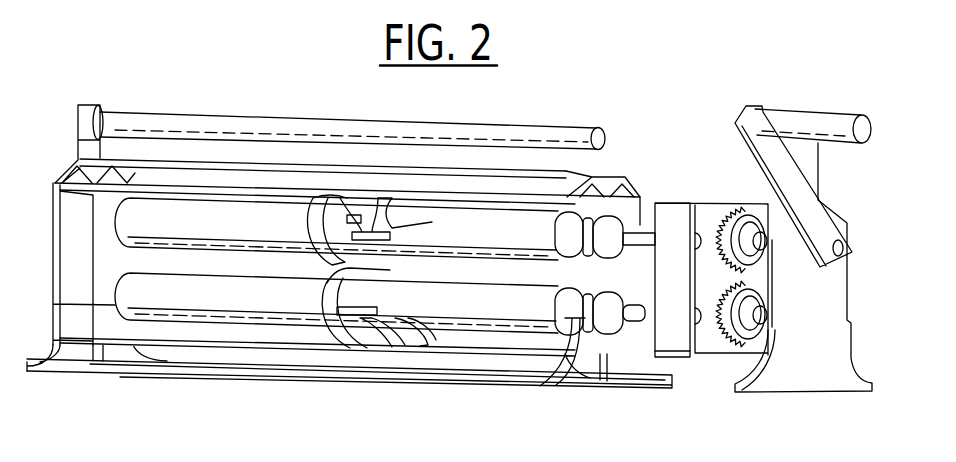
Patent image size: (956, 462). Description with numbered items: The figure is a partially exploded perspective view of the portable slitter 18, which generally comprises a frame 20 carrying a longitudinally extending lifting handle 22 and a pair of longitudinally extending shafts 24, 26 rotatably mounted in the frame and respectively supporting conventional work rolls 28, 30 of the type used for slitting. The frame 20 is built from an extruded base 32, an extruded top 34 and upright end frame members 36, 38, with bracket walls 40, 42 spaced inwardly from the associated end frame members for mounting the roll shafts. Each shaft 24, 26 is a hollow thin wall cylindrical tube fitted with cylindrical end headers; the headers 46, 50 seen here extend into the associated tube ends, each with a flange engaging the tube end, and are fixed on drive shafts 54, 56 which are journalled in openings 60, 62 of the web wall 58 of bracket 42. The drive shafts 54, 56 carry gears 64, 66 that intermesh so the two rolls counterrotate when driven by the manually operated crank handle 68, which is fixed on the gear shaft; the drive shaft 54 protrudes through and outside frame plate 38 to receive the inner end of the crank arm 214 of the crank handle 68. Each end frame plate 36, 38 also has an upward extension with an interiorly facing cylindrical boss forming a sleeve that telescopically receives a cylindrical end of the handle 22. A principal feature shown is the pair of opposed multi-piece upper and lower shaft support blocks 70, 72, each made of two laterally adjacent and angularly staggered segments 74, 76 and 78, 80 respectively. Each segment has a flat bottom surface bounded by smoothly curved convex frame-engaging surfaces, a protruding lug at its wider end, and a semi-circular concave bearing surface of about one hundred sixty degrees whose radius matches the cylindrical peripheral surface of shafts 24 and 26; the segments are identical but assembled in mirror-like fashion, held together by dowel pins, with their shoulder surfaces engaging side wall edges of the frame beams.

The portable slitter 18 is at (238, 108).
The frame 20 is at (63, 152).
The lifting handle 22 is at (388, 112).
The shaft 24 is at (173, 205).
The shaft 26 is at (293, 322).
The work roll 28 is at (311, 200).
The work roll 30 is at (390, 270).
The extruded base 32 is at (197, 380).
The extruded top 34 is at (610, 170).
The end frame member 36 is at (53, 185).
The end frame member 38 is at (822, 367).
The bracket wall 40 is at (48, 253).
The bracket wall 42 is at (688, 197).
The end header 46 is at (628, 228).
The end header 50 is at (623, 302).
The drive shaft 54 is at (635, 222).
The drive shaft 56 is at (613, 352).
The web wall 58 is at (677, 347).
The opening 60 is at (700, 230).
The opening 62 is at (707, 350).
The gear 64 is at (738, 212).
The gear 66 is at (753, 348).
The crank handle 68 is at (800, 108).
The upper shaft support block 70 is at (413, 198).
The lower shaft support block 72 is at (380, 345).
The segment 74 is at (375, 212).
The segment 76 is at (352, 214).
The segment 78 is at (355, 340).
The segment 80 is at (430, 345).
The crank arm 214 is at (817, 243).